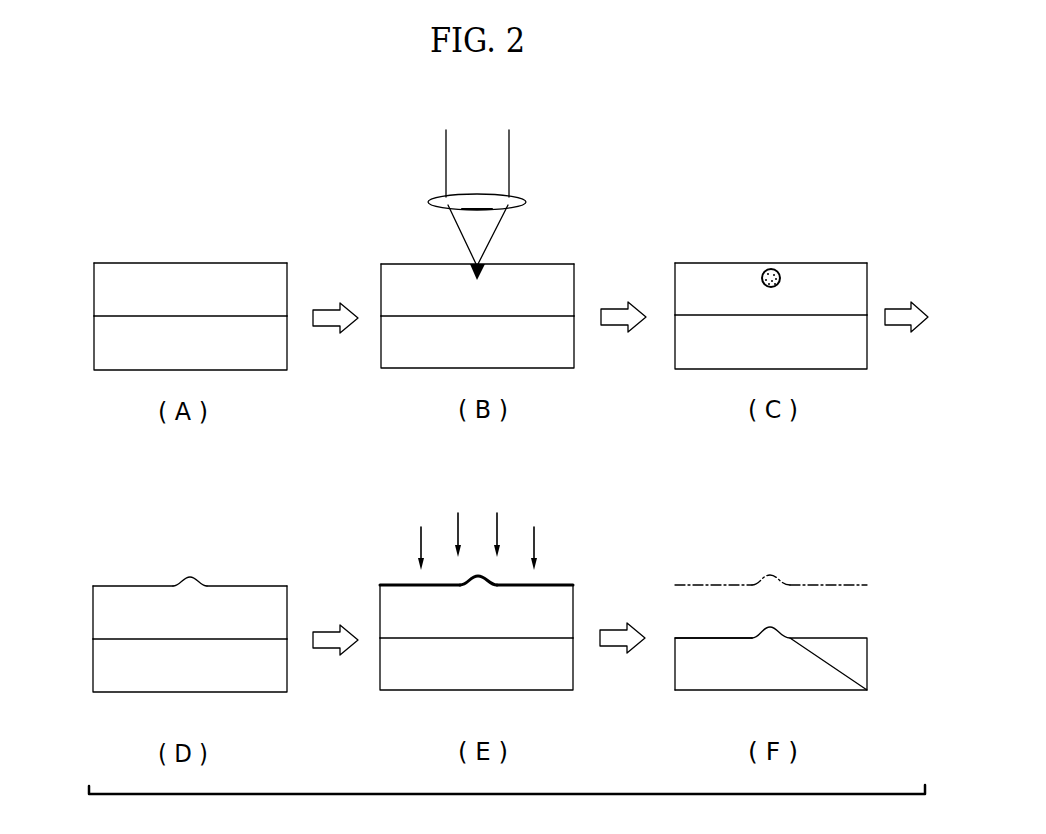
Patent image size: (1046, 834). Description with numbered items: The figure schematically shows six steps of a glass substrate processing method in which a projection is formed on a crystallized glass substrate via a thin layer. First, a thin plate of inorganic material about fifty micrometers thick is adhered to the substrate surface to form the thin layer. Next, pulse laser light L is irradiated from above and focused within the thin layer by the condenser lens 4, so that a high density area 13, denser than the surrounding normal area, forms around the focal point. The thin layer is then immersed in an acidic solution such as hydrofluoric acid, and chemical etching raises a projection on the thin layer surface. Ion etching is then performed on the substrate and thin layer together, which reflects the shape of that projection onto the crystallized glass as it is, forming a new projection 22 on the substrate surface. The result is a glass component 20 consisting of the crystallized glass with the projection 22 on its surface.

The pulse laser light L is at (446, 141).
The condenser lens 4 is at (516, 198).
The high density area 13 is at (770, 268).
The glass component 20 is at (882, 621).
The projection 22 is at (772, 637).